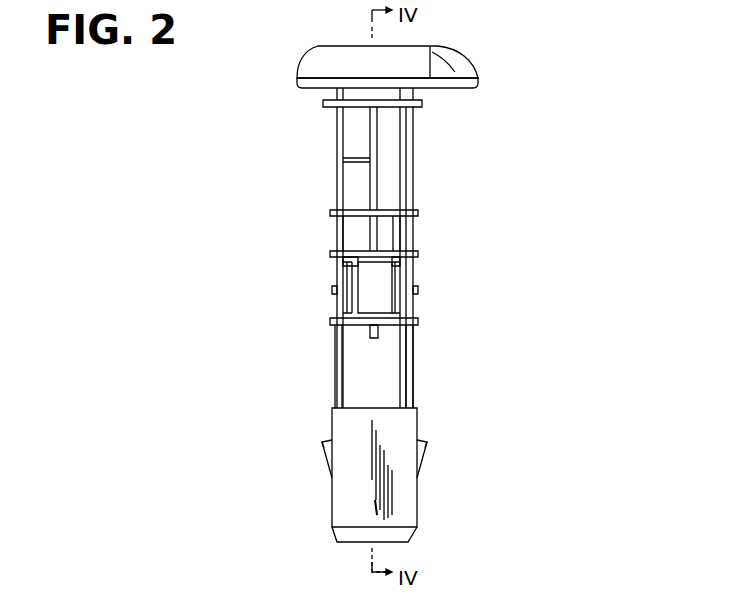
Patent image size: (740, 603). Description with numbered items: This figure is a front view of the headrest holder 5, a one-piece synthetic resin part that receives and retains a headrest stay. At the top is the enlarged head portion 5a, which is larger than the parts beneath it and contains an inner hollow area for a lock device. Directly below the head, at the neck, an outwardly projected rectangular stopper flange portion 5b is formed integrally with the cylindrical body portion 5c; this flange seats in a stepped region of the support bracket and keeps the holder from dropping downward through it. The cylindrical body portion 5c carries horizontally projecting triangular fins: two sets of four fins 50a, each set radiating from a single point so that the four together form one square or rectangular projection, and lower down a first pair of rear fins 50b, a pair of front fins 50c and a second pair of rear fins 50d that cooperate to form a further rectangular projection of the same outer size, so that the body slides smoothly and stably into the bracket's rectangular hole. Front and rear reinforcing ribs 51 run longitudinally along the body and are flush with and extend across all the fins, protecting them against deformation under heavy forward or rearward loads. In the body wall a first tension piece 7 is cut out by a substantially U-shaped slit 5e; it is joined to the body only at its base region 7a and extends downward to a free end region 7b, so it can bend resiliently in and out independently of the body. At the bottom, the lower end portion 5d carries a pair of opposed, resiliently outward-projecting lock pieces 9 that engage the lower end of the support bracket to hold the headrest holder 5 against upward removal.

The headrest holder 5 is at (530, 174).
The head portion 5a is at (453, 64).
The stopper flange portion 5b is at (325, 104).
The cylindrical body portion 5c is at (410, 162).
The lower end portion 5d is at (395, 505).
The U-shaped slit 5e is at (418, 290).
The first tension piece 7 is at (343, 298).
The base region 7a is at (413, 266).
The free end region 7b is at (413, 310).
The lock piece 9 is at (322, 455).
The triangular fin 50a is at (330, 212).
The rear triangular fin 50b is at (335, 290).
The front triangular fin 50c is at (333, 323).
The rear triangular fin 50d is at (332, 345).
The reinforcing rib 51 is at (343, 161).